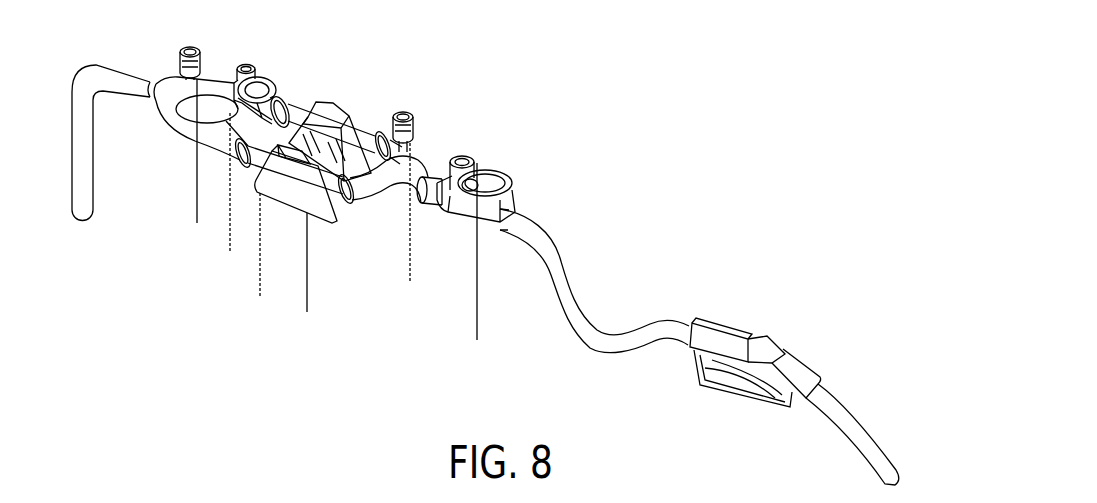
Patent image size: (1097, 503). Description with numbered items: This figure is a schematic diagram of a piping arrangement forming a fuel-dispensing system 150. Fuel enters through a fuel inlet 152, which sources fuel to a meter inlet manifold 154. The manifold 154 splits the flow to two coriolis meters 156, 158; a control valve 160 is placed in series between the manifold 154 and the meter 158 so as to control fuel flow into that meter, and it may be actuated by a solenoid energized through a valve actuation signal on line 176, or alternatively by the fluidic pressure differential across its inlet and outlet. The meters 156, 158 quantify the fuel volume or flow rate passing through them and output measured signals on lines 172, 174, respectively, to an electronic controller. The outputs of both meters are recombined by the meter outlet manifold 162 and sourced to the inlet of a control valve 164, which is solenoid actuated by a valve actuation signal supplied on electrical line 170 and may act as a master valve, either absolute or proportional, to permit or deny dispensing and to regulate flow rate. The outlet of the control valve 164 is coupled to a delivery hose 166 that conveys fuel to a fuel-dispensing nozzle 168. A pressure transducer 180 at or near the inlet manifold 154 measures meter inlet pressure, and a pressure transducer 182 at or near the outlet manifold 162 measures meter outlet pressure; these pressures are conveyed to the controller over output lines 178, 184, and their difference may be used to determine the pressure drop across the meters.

The system 150 is at (475, 78).
The fuel inlet 152 is at (82, 222).
The meter inlet manifold 154 is at (168, 131).
The coriolis meter 156 is at (328, 222).
The coriolis meter 158 is at (330, 104).
The control valve 160 is at (253, 70).
The manifold 162 is at (372, 207).
The control valve 164 is at (500, 173).
The delivery hose 166 is at (568, 265).
The fuel-dispensing nozzle 168 is at (772, 340).
The electrical line 170 is at (477, 318).
The line 172 is at (307, 310).
The line 174 is at (260, 298).
The line 176 is at (230, 240).
The output line 178 is at (197, 200).
The pressure transducer 180 is at (201, 55).
The pressure transducer 182 is at (406, 112).
The output line 184 is at (411, 283).